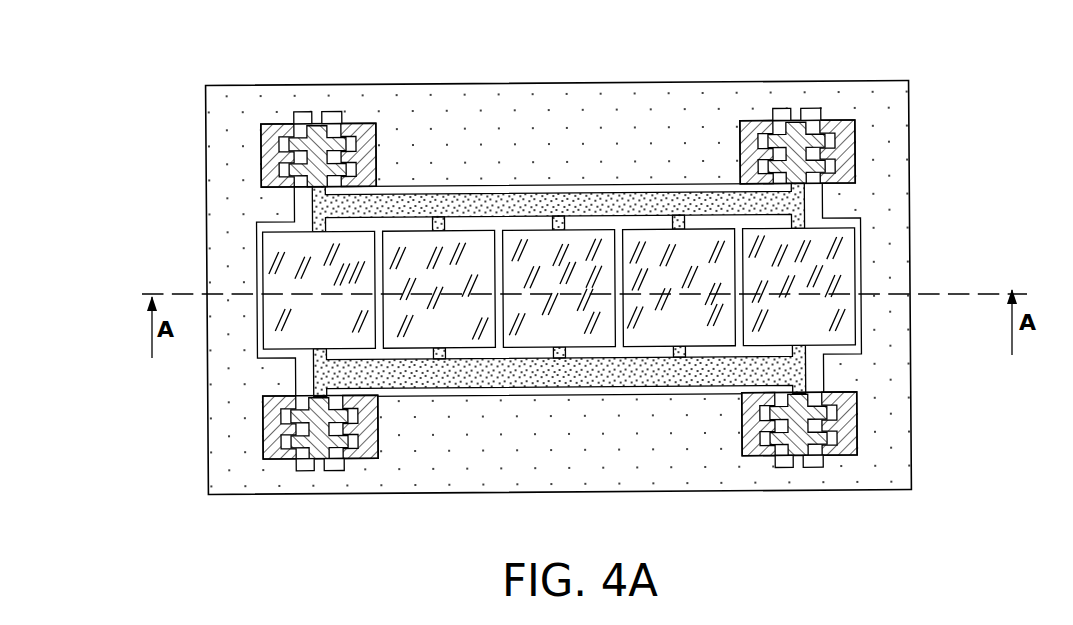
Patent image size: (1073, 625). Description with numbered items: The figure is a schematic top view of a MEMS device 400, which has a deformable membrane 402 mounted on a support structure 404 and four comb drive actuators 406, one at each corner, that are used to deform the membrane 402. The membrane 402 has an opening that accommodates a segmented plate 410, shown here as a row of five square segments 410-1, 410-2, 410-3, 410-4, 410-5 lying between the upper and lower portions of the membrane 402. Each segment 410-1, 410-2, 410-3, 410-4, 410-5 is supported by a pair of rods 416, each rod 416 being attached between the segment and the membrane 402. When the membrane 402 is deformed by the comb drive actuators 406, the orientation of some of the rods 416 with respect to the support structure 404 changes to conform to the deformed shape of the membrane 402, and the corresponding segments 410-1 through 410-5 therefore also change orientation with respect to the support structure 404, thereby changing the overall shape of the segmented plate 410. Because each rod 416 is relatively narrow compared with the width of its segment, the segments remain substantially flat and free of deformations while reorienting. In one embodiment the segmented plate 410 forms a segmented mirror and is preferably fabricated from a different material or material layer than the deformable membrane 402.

The MEMS device 400 is at (133, 50).
The deformable membrane 402 is at (665, 381).
The support structure 404 is at (883, 418).
The comb drive actuator 406 is at (252, 131).
The segmented plate 410 is at (651, 287).
The segment 410-1 is at (319, 290).
The segment 410-2 is at (439, 289).
The segment 410-3 is at (559, 289).
The segment 410-4 is at (679, 288).
The segment 410-5 is at (799, 287).
The rod 416 is at (440, 215).